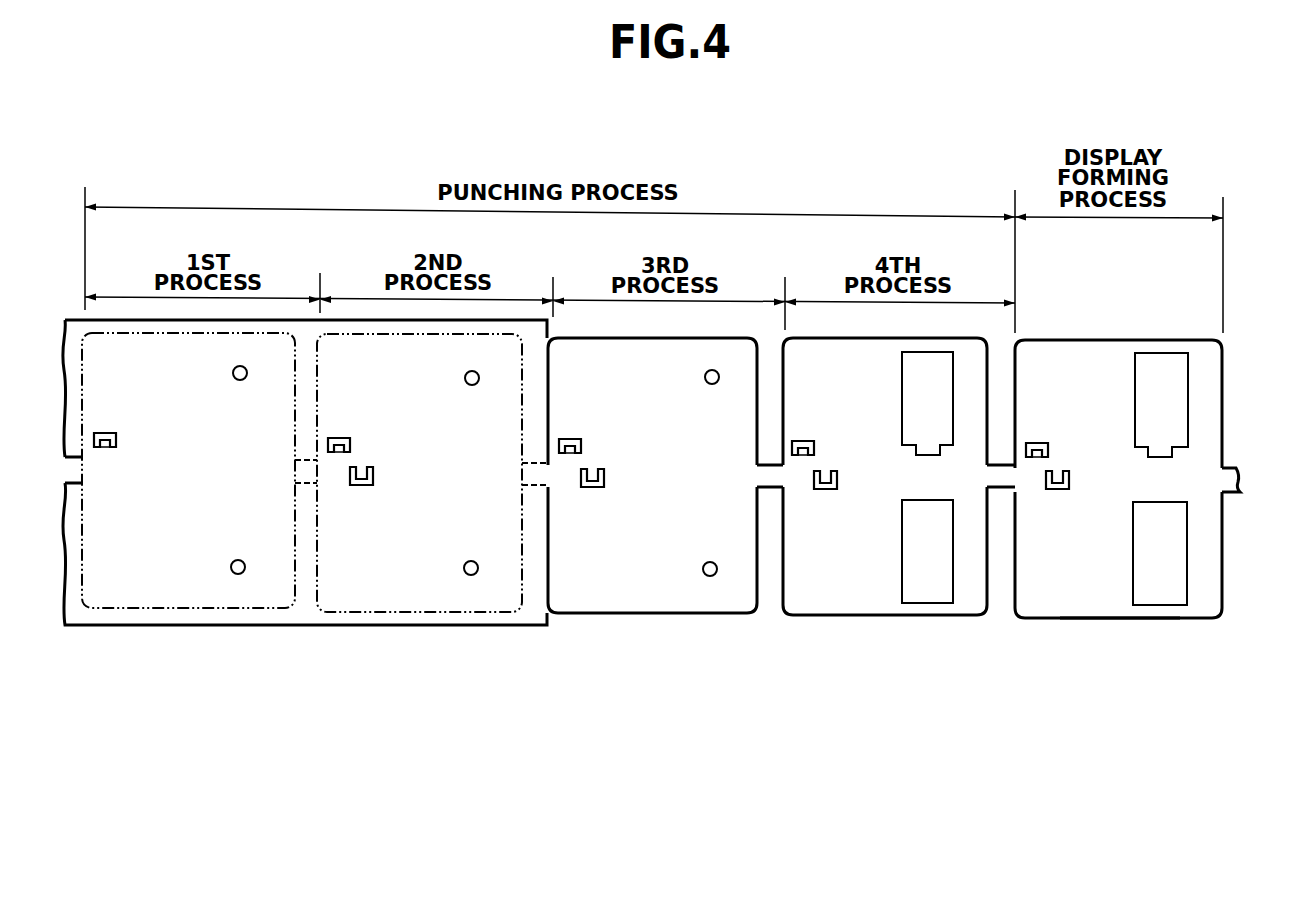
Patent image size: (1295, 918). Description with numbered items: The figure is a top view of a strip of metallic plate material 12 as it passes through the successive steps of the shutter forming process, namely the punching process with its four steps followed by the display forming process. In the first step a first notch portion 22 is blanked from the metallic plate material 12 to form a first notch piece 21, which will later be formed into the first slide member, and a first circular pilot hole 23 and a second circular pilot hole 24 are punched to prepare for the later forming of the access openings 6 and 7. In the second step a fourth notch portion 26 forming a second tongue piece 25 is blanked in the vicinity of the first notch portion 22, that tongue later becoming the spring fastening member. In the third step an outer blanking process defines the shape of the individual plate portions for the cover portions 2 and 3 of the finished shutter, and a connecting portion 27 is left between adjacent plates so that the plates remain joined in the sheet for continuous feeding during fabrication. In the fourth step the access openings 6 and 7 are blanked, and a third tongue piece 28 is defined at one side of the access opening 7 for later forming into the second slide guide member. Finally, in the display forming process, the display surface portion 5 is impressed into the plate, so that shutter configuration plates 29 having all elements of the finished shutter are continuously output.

The metallic plate material 12 is at (73, 330).
The cover portion 2 is at (647, 605).
The cover portion 3 is at (722, 346).
The display surface portion 5 is at (1077, 585).
The access opening 6 is at (925, 598).
The access opening 7 is at (945, 360).
The first notch piece 21 is at (110, 452).
The first notch portion 22 is at (106, 432).
The first circular pilot hole 23 is at (236, 560).
The second circular pilot hole 24 is at (238, 381).
The second tongue piece 25 is at (374, 474).
The fourth notch portion 26 is at (363, 487).
The connecting portion 27 is at (300, 471).
The third tongue piece 28 is at (930, 455).
The shutter configuration plate 29 is at (1118, 630).